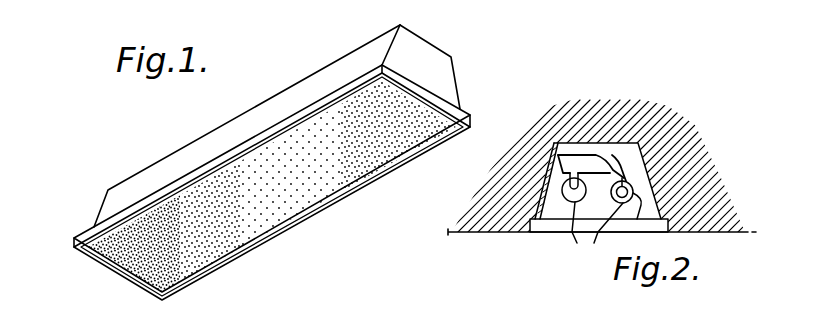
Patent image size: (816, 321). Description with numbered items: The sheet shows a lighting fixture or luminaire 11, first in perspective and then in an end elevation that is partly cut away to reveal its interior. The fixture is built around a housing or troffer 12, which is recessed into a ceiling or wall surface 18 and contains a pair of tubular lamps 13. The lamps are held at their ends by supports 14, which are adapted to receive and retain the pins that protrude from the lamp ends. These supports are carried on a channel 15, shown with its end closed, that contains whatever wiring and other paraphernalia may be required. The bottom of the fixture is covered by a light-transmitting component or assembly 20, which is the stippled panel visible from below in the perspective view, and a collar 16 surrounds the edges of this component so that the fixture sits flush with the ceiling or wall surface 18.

In FIG. 1, the lighting fixture or luminaire 11 is at (77, 222).
In FIG. 1, the housing or troffer 12 is at (312, 80).
In FIG. 2, the housing or troffer 12 is at (549, 178).
In FIG. 2, the tubular lamps 13 is at (574, 232).
In FIG. 2, the supports 14 is at (625, 176).
In FIG. 2, the channel 15 is at (589, 156).
In FIG. 1, the collar 16 is at (465, 111).
In FIG. 2, the collar 16 is at (555, 229).
In FIG. 2, the ceiling or wall surface 18 is at (733, 233).
In FIG. 1, the light-transmitting component or assembly 20 is at (343, 184).